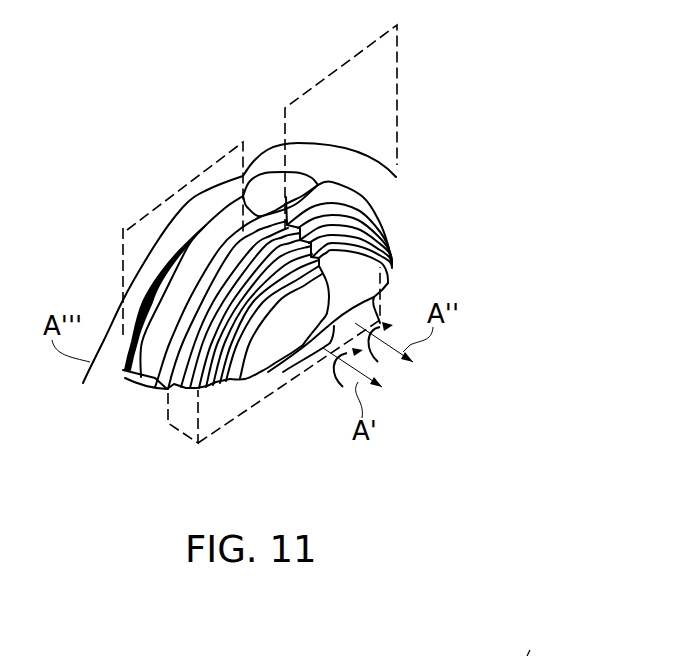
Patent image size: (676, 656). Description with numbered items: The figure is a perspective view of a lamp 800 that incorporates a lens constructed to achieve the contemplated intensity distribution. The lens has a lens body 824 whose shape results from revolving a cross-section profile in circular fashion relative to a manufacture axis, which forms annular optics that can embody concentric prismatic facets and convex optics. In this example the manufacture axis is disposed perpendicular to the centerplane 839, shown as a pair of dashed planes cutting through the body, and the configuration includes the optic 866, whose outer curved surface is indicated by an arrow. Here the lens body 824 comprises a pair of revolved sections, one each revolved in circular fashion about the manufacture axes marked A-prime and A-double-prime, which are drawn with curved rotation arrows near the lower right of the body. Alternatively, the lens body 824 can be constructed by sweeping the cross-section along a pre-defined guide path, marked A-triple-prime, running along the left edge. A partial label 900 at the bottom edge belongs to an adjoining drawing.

The lamp 800 is at (348, 205).
The lens body 824 is at (490, 287).
The centerplane 839 is at (182, 186).
The optic 866 is at (398, 194).
The assembly (next figure) 900 is at (573, 655).